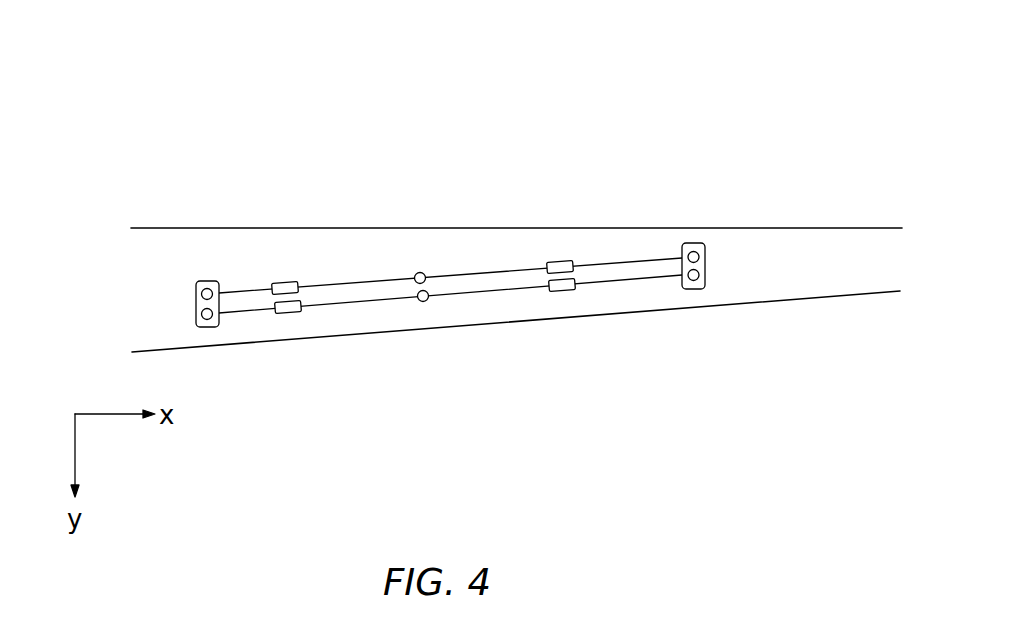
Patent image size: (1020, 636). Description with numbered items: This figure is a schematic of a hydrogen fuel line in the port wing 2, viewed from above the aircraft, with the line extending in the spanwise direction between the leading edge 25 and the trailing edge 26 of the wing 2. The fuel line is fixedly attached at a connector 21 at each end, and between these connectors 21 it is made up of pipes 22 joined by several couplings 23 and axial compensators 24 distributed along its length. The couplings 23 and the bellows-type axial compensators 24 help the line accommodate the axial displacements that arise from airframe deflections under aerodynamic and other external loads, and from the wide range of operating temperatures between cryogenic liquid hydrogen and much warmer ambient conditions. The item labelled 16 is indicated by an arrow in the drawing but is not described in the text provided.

The port wing 2 is at (748, 98).
The sensor unit 16 is at (720, 264).
The connector 21 is at (196, 300).
The pipe 22 is at (353, 282).
The coupling 23 is at (418, 273).
The axial compensator 24 is at (283, 282).
The leading edge 25 is at (795, 300).
The trailing edge 26 is at (840, 228).